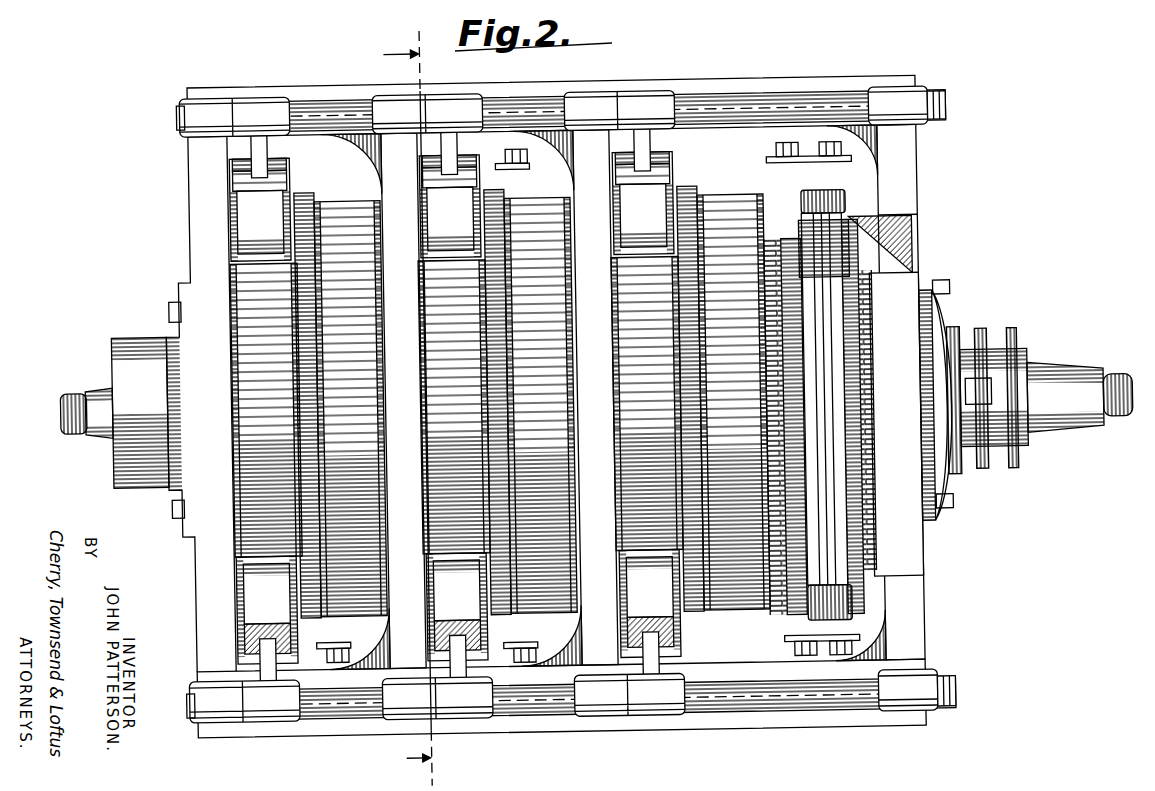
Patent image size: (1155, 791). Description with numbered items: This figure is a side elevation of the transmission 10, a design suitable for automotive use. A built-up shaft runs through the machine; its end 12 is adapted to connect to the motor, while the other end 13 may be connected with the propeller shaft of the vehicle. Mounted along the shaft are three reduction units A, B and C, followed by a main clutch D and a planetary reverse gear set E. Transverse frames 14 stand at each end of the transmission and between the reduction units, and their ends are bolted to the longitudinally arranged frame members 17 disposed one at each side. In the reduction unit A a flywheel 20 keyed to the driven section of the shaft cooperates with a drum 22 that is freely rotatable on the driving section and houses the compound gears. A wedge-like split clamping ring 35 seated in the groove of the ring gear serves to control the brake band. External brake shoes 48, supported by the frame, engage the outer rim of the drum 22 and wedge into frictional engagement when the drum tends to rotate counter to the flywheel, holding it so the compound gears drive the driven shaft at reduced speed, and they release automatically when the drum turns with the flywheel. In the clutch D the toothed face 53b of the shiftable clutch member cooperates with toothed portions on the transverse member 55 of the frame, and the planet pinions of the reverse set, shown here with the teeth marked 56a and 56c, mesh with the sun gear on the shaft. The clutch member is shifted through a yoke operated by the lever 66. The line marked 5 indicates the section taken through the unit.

The section line 5- 5 is at (407, 409).
The transmission 10 is at (182, 245).
The shaft end 12 is at (71, 388).
The shaft end 13 is at (1066, 380).
The transverse frames 14 is at (205, 575).
The longitudinal frame members 17 is at (748, 89).
The flywheel 20 is at (350, 409).
The drum 22 is at (266, 410).
The split clamping ring 35 is at (306, 295).
The external brake shoes 48 is at (512, 234).
The toothed face of clutch member 53b is at (866, 294).
The transverse member 55 is at (778, 406).
The gear tooth 56a is at (778, 360).
The gear tooth 56c is at (778, 333).
The lever 66 is at (850, 206).
The reduction unit A is at (308, 410).
The reduction unit B is at (497, 406).
The reduction unit C is at (690, 403).
The main clutch D is at (894, 422).
The planetary reverse gear set E is at (786, 582).